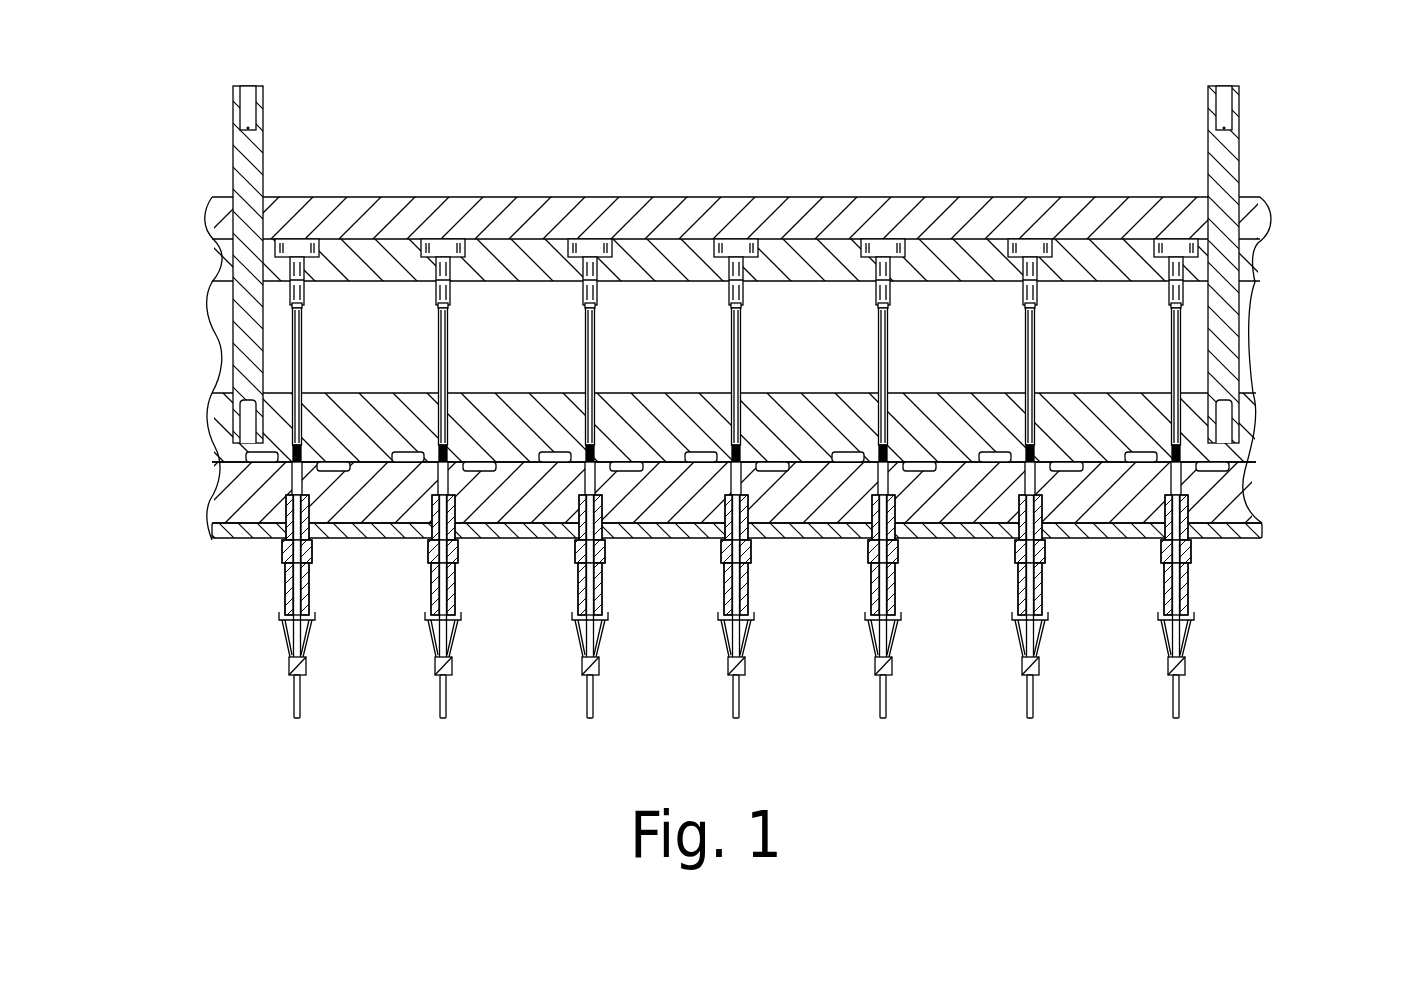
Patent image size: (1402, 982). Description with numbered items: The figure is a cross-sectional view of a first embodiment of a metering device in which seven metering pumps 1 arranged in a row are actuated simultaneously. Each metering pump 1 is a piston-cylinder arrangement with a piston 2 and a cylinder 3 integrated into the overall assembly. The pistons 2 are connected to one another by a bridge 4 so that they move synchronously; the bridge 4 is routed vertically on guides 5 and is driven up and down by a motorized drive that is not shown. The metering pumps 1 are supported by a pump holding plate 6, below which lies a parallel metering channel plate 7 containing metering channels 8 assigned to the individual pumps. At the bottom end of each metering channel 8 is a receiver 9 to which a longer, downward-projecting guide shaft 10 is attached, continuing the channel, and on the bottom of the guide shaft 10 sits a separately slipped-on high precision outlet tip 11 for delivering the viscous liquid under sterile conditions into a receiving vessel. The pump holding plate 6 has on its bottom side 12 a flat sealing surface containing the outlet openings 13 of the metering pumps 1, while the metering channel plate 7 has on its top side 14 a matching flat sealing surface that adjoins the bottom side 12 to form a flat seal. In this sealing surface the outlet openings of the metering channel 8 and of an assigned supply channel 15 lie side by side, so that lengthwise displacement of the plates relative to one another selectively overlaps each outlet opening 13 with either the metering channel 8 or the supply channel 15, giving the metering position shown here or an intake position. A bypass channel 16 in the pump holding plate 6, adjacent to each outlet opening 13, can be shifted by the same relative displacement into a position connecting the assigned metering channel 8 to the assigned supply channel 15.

The metering pump 1 is at (1040, 320).
The piston 2 is at (287, 385).
The cylinder 3 is at (286, 414).
The bridge 4 is at (348, 208).
The guide 5 is at (243, 152).
The pump holding plate 6 is at (1238, 452).
The metering channel plate 7 is at (1236, 512).
The metering channel 8 is at (1032, 478).
The receiver 9 is at (1200, 512).
The guide shaft 10 is at (1190, 587).
The outlet tip 11 is at (1187, 663).
The bottom side 12 is at (255, 480).
The outlet opening 13 is at (235, 536).
The top side 14 is at (228, 453).
The supply channel 15 is at (1225, 496).
The bypass channel 16 is at (1140, 430).